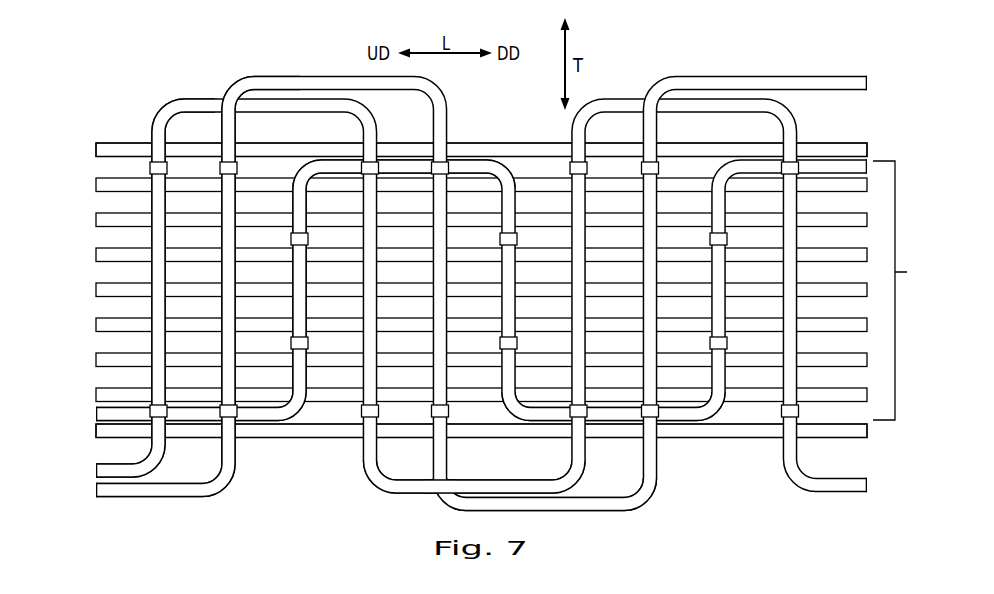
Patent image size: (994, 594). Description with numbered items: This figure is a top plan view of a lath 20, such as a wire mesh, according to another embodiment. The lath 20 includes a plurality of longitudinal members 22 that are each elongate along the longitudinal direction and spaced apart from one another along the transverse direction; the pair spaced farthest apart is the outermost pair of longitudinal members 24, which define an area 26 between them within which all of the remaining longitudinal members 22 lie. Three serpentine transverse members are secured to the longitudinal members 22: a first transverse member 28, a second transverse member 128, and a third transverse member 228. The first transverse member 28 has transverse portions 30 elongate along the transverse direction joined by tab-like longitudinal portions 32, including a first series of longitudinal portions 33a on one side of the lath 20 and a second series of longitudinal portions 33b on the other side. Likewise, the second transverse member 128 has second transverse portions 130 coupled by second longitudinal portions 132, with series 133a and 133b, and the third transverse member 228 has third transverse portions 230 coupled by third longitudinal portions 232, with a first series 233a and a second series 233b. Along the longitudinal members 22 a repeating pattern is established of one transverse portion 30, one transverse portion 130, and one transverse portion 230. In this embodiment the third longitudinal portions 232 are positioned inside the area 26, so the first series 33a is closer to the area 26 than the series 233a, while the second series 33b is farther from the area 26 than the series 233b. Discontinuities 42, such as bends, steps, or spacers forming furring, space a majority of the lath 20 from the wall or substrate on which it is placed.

The lath 20 is at (868, 48).
The longitudinal members 22 is at (452, 291).
The outermost pair of longitudinal members 24 is at (504, 291).
The area 26 is at (901, 290).
The transverse member 28 is at (88, 471).
The transverse portions 30 is at (450, 294).
The longitudinal portions 32 is at (167, 251).
The first series of longitudinal portions 33a is at (154, 82).
The second series of longitudinal portions 33b is at (497, 509).
The discontinuity 42 is at (474, 344).
The second transverse member 128 is at (88, 492).
The second plurality of transverse portions 130 is at (446, 279).
The second plurality of longitudinal portions 132 is at (245, 252).
The first series of longitudinal portions of the second transverse member 133a is at (226, 61).
The second series of longitudinal portions of the second transverse member 133b is at (558, 511).
The third transverse member 228 is at (88, 415).
The third plurality of transverse portions 230 is at (444, 290).
The third plurality of longitudinal portions 232 is at (344, 255).
The first series of longitudinal portions of the third transverse member 233a is at (494, 151).
The second series of longitudinal portions of the third transverse member 233b is at (636, 429).